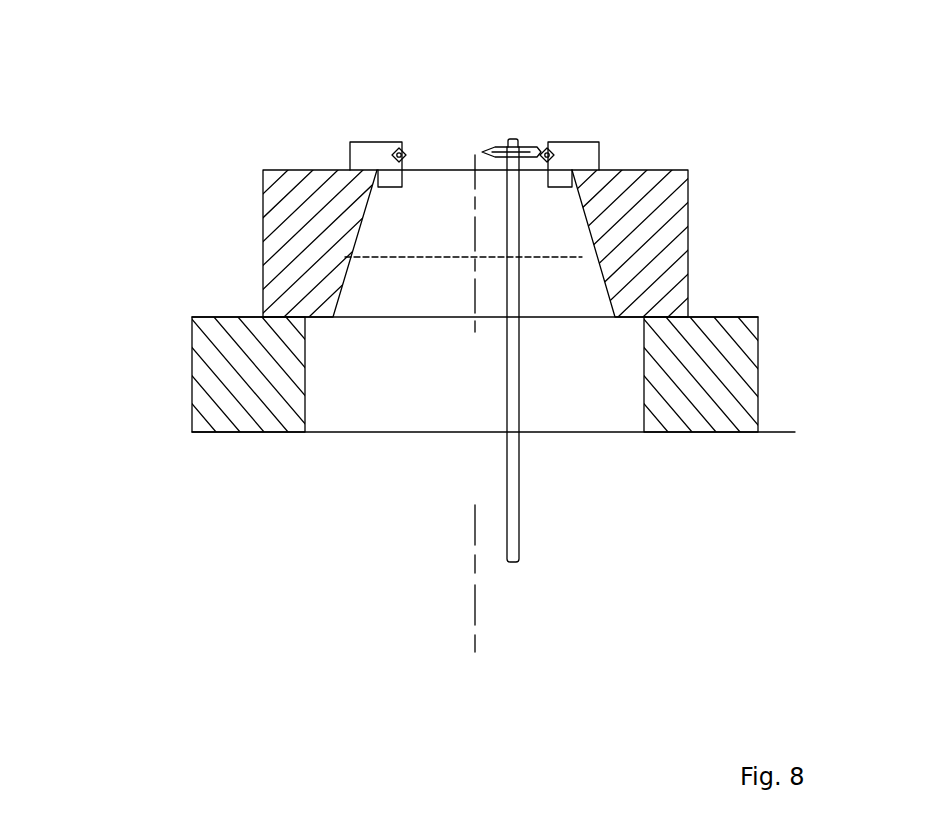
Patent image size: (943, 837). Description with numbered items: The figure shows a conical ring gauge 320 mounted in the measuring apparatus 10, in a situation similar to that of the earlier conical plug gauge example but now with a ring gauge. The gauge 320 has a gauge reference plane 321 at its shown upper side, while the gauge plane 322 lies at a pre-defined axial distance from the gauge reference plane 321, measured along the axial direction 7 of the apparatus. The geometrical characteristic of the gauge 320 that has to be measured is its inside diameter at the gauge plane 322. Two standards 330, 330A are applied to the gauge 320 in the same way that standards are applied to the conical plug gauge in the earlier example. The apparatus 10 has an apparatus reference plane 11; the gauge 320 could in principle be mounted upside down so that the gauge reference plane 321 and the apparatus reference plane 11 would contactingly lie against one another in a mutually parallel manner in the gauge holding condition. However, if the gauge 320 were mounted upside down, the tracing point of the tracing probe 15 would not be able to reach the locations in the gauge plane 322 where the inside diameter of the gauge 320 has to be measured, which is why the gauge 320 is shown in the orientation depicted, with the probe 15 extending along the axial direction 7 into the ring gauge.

The axial direction 7 is at (446, 403).
The apparatus 10 is at (150, 378).
The apparatus reference plane 11 is at (465, 342).
The tracing probe 15 is at (489, 290).
The conical ring gauge 320 is at (465, 162).
The gauge reference plane 321 is at (465, 211).
The gauge plane 322 is at (463, 172).
The standard 330 is at (354, 109).
The standard 330A is at (604, 109).